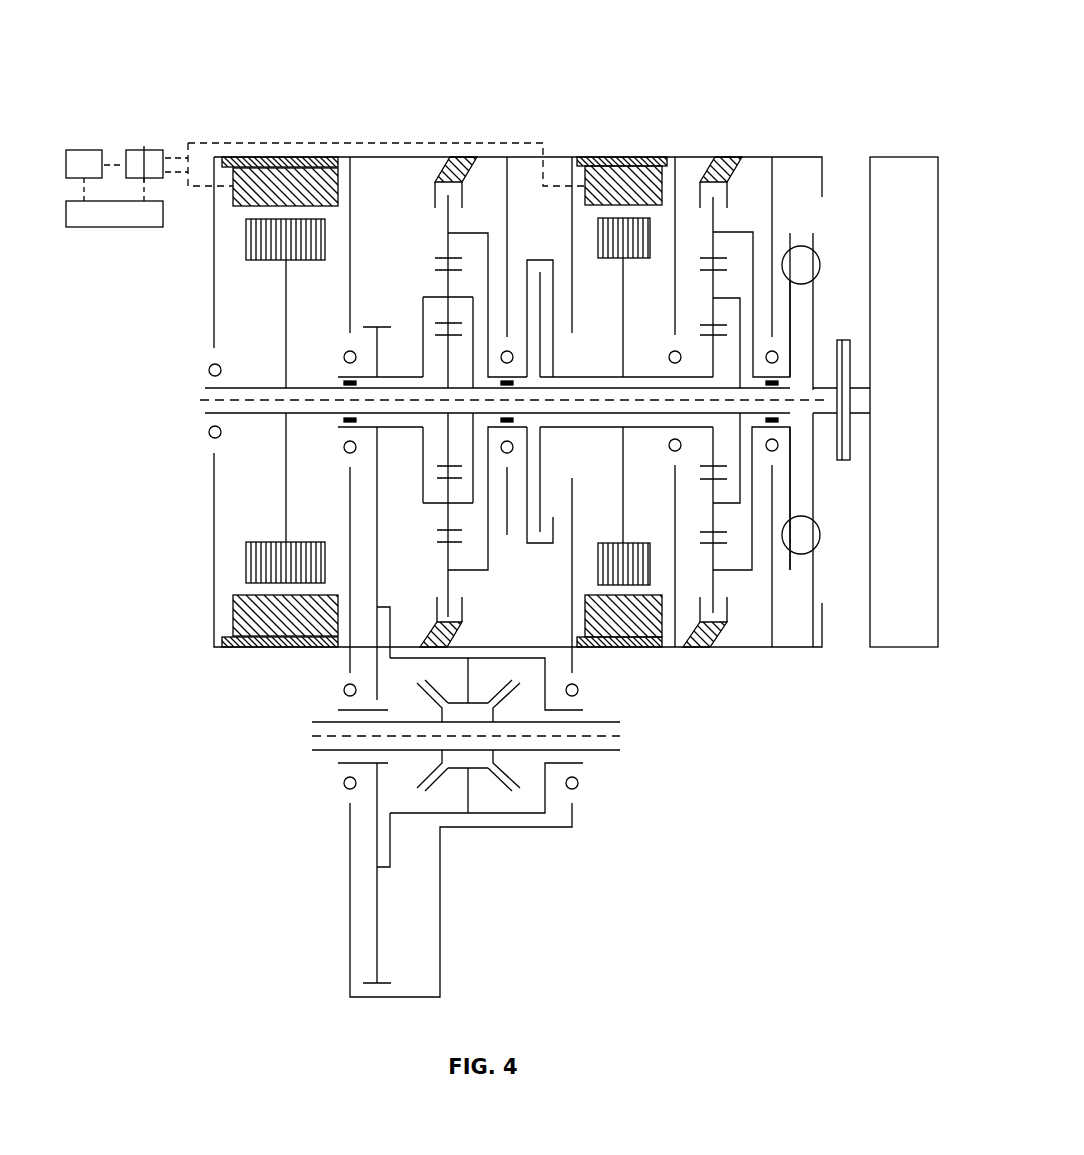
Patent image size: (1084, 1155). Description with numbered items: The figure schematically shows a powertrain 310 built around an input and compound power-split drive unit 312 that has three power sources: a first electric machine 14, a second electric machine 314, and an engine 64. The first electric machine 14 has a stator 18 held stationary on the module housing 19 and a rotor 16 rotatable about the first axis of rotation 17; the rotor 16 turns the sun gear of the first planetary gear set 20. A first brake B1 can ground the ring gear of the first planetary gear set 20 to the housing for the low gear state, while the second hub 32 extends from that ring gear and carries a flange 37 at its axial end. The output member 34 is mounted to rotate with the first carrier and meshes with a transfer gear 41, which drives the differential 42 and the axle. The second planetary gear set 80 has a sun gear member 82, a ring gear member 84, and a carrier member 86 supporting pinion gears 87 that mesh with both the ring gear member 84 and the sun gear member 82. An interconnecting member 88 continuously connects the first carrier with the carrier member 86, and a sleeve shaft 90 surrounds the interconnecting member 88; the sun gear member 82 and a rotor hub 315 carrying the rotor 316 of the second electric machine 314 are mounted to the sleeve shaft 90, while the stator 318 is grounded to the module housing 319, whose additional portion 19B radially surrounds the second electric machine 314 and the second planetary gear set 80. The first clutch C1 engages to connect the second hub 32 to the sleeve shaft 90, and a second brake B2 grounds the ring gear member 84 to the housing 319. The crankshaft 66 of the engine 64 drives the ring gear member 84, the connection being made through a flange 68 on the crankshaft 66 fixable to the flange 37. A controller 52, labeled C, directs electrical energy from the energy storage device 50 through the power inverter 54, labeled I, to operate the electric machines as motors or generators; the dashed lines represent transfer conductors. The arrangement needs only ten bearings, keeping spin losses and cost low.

The powertrain 310 is at (838, 46).
The drive unit 312 is at (205, 352).
The first electric machine 14 is at (267, 402).
The rotor 16 is at (260, 262).
The stator 18 is at (233, 190).
The first axis of rotation 17 is at (204, 400).
The module housing 19 is at (458, 157).
The additional portion of the housing 19B is at (762, 157).
The first planetary gear set 20 is at (429, 287).
The second hub 32 is at (467, 232).
The output member 34 is at (378, 338).
The flange 37 is at (840, 340).
The transfer gear 41 is at (377, 907).
The differential 42 is at (559, 816).
The energy storage device 50 is at (112, 228).
The controller 52 is at (88, 150).
The power inverter 54 is at (146, 150).
The engine 64 is at (905, 650).
The crankshaft 66 is at (862, 388).
The flange 68 is at (852, 340).
The second planetary gear set 80 is at (718, 574).
The sun gear member 82 is at (700, 465).
The ring gear member 84 is at (700, 530).
The carrier member 86 is at (738, 506).
The pinion gears 87 is at (712, 515).
The interconnecting member 88 is at (470, 292).
The sleeve shaft 90 is at (556, 377).
The second electric machine 314 is at (611, 268).
The rotor hub 315 is at (625, 322).
The rotor 316 is at (652, 237).
The stator 318 is at (667, 172).
The module housing 319 is at (402, 157).
The first brake B1 is at (434, 211).
The second brake B2 is at (724, 210).
The first clutch C1 is at (544, 284).